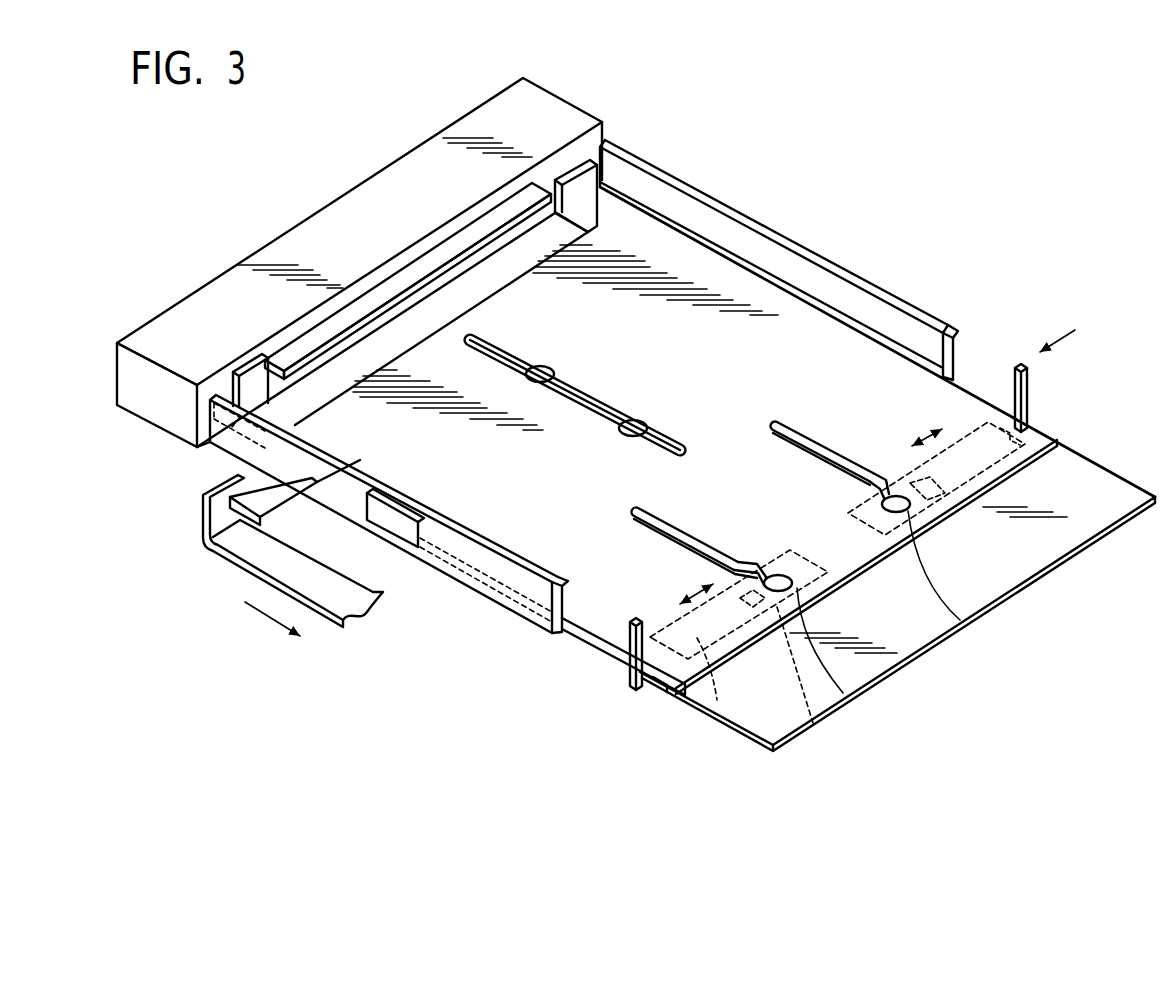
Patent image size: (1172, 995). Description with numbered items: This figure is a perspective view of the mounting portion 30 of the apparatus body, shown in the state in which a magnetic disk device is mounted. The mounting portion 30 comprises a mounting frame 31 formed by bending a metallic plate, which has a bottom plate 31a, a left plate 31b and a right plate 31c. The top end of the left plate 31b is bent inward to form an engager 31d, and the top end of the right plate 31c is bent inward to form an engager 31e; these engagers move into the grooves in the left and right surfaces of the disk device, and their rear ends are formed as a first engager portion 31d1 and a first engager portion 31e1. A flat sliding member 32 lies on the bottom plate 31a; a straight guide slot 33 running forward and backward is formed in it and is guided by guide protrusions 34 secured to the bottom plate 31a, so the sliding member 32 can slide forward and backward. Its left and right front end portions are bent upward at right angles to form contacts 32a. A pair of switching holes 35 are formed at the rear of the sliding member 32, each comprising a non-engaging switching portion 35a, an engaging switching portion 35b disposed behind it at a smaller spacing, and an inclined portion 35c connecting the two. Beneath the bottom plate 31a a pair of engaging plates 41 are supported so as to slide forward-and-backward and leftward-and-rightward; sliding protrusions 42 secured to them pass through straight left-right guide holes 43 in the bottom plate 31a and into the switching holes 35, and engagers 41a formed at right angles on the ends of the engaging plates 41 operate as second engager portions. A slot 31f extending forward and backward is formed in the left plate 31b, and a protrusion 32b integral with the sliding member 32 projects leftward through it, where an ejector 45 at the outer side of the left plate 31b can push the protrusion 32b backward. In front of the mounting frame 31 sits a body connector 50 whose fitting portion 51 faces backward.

The mounting portion 30 is at (737, 148).
The mounting frame 31 is at (779, 232).
The bottom plate 31a is at (892, 636).
The left plate 31b is at (505, 582).
The right plate 31c is at (657, 205).
The engager 31d is at (455, 527).
The first engager portion 31d1 is at (622, 633).
The engager 31e is at (895, 300).
The first engager portion 31e1 is at (955, 340).
The slot 31f is at (372, 497).
The sliding member 32 is at (788, 330).
The contacts 32a is at (580, 185).
The protrusion 32b is at (258, 490).
The guide slot 33 is at (600, 400).
The guide protrusions 34 is at (545, 372).
The switching holes 35 is at (683, 525).
The non-engaging switching portion 35a is at (657, 515).
The engaging switching portion 35b is at (762, 562).
The inclined portion 35c is at (751, 546).
The engaging plates 41 is at (978, 466).
The engagers 41a is at (1030, 386).
The sliding protrusions 42 is at (843, 693).
The guide holes 43 is at (988, 510).
The ejector 45 is at (240, 556).
The body connector 50 is at (430, 163).
The fitting portion 51 is at (393, 280).